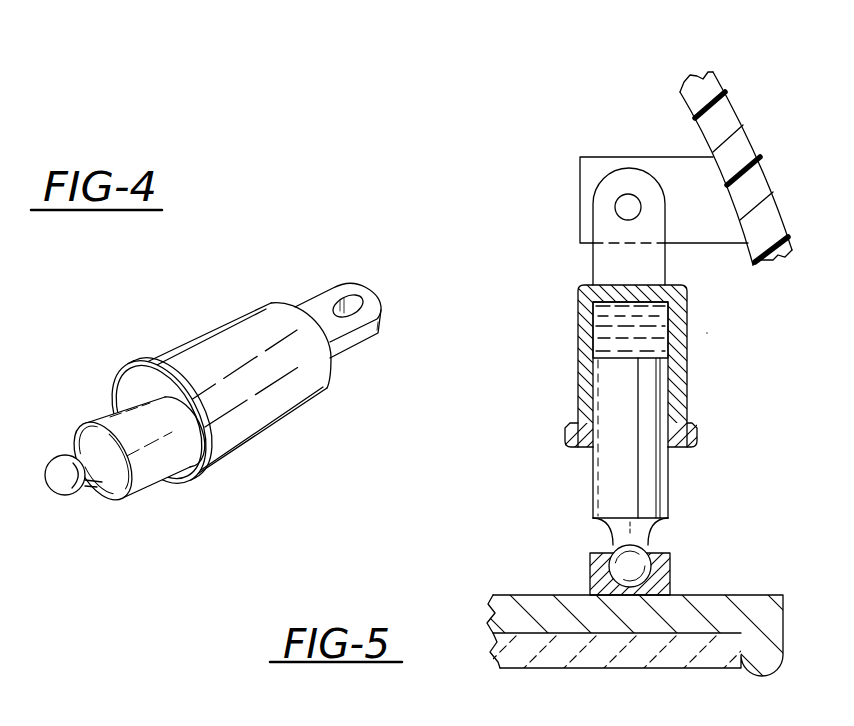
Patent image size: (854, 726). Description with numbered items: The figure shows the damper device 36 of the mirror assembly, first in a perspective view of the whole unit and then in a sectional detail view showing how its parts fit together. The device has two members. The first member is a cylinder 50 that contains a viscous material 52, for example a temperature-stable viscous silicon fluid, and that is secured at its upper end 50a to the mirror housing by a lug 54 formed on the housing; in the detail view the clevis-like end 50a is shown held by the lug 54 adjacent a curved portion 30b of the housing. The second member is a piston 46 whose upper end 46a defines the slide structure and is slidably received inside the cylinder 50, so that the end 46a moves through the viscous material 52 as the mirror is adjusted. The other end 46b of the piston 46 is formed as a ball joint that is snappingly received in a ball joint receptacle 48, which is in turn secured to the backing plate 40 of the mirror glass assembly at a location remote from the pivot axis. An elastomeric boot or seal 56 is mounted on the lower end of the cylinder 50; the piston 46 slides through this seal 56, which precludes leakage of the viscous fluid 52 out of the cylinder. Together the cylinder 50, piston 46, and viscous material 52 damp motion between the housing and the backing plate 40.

In FIG. 5, the strap 30b is at (742, 117).
In FIG. 4, the damper assembly 36 is at (178, 319).
In FIG. 5, the damper assembly 36 is at (716, 328).
In FIG. 5, the backing plate 40 is at (500, 618).
In FIG. 4, the piston 46 is at (172, 477).
In FIG. 5, the piston 46 is at (612, 454).
In FIG. 5, the end of piston 46a is at (603, 385).
In FIG. 4, the end of piston 46b is at (63, 492).
In FIG. 5, the end of piston 46b is at (590, 562).
In FIG. 5, the ball joint receptacle 48 is at (592, 580).
In FIG. 4, the cylinder 50 is at (290, 405).
In FIG. 5, the cylinder 50 is at (688, 400).
In FIG. 5, the end of cylinder 50a is at (635, 183).
In FIG. 5, the viscous material 52 is at (603, 332).
In FIG. 5, the lug 54 is at (592, 157).
In FIG. 5, the elastomeric boot or seal 56 is at (565, 437).